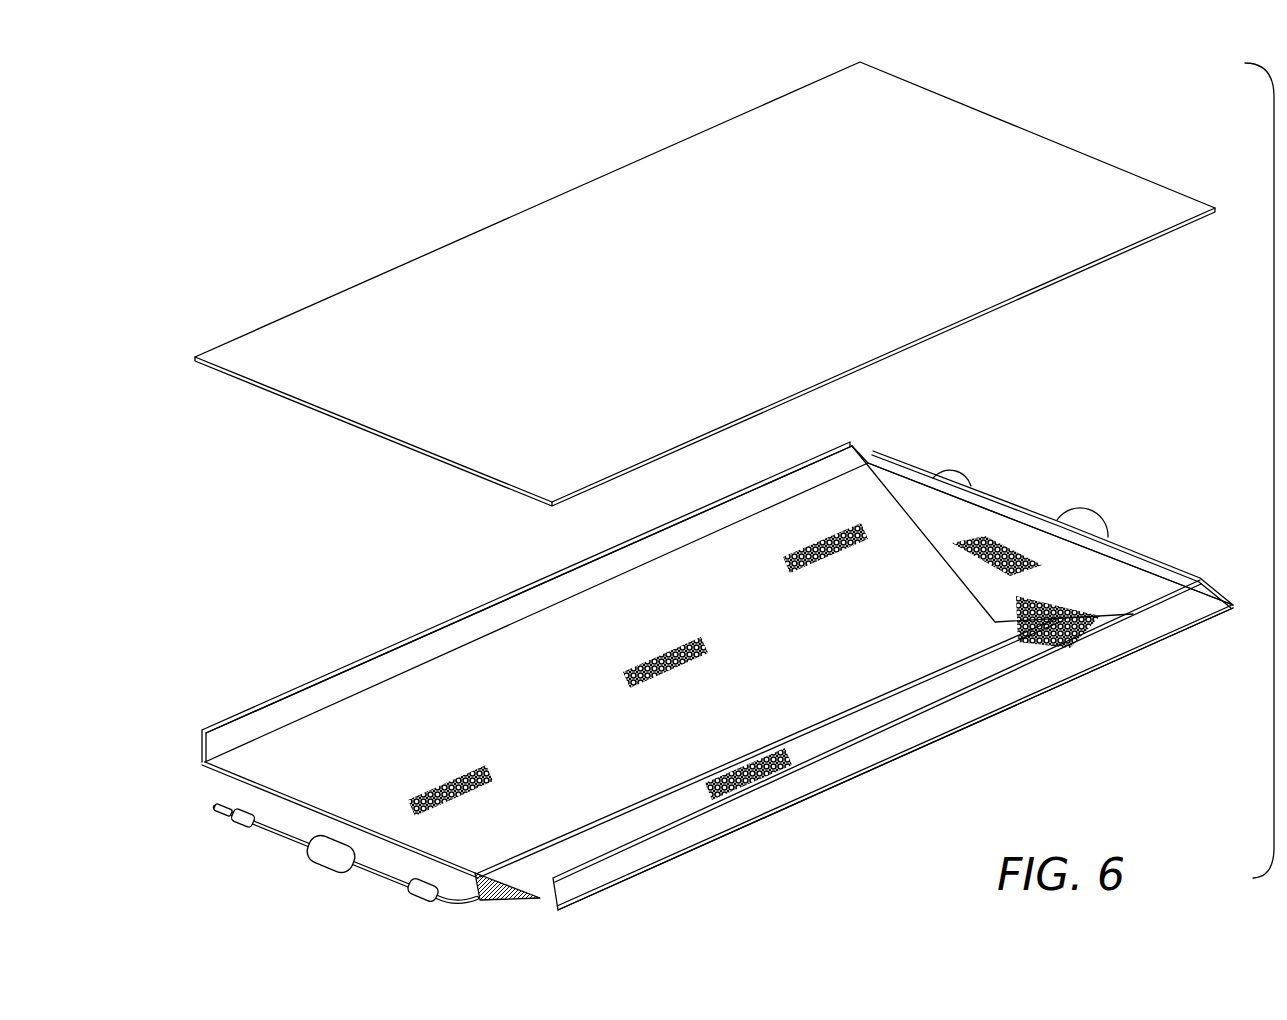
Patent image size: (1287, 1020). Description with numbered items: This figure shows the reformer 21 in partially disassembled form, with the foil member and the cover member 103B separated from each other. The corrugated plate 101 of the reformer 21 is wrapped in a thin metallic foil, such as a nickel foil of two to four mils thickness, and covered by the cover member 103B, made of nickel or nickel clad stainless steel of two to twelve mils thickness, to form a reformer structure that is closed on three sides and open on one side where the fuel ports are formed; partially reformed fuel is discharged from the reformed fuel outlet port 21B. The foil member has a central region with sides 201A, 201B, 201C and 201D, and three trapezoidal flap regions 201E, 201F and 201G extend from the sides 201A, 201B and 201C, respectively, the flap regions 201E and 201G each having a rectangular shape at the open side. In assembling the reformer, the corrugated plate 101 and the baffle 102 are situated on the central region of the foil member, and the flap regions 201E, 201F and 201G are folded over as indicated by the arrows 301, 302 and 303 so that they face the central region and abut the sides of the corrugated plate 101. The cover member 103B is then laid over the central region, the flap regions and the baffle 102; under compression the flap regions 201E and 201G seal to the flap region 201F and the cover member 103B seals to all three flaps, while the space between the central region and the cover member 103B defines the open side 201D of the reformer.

The cover member 103B is at (518, 230).
The corrugated plate 101 is at (296, 488).
The reformer 21 is at (346, 524).
The fuel outlet port 21B is at (253, 777).
The baffle 102 is at (1018, 640).
The side of central region 201A is at (755, 825).
The side of central region 201B is at (1150, 573).
The side of central region 201C is at (320, 703).
The open side 201D is at (208, 768).
The flap region 201E is at (1000, 695).
The flap region 201F is at (995, 505).
The flap region 201G is at (368, 667).
The arrow 301 is at (1000, 665).
The arrow 302 is at (882, 548).
The arrow 303 is at (672, 522).